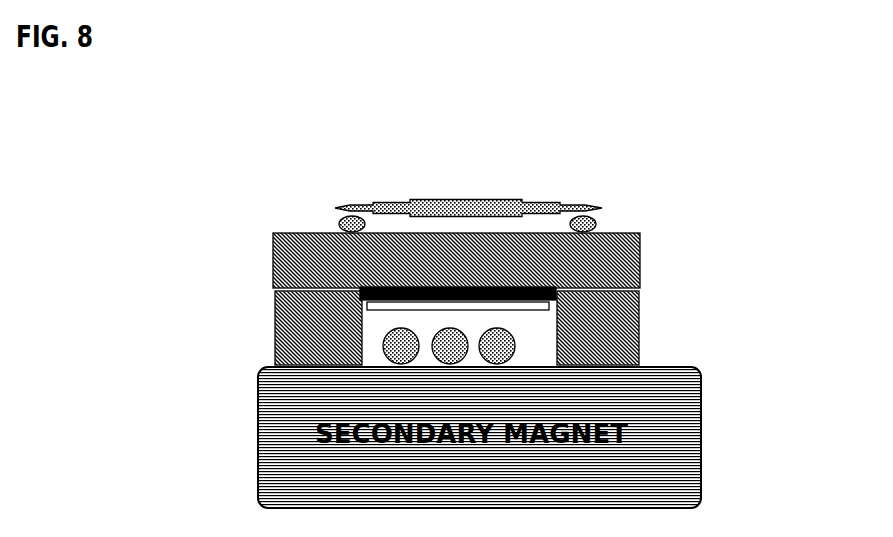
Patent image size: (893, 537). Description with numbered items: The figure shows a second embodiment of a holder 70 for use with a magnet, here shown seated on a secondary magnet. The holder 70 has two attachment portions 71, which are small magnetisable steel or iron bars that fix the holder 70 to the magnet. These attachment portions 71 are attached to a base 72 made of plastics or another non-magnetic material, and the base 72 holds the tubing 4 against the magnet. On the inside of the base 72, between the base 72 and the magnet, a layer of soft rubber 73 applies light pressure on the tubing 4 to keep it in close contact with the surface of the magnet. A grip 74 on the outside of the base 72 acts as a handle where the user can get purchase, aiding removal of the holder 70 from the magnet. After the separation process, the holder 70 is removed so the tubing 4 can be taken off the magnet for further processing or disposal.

The holder 70 is at (361, 332).
The attachment portions 71 is at (300, 333).
The base 72 is at (593, 258).
The layer of soft rubber 73 is at (396, 225).
The grip 74 is at (444, 204).
The tubing 4 is at (490, 343).